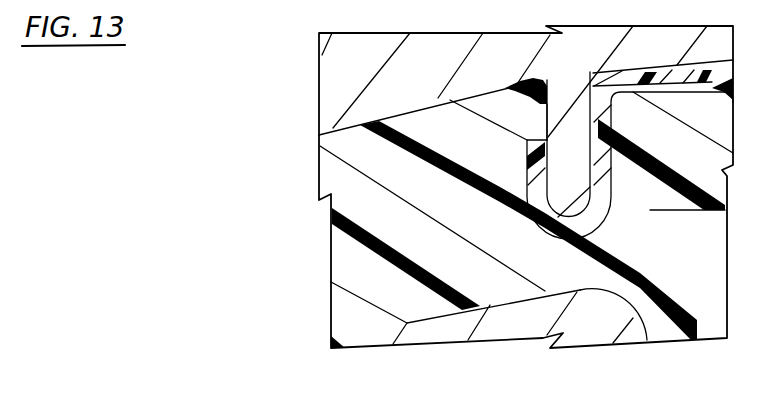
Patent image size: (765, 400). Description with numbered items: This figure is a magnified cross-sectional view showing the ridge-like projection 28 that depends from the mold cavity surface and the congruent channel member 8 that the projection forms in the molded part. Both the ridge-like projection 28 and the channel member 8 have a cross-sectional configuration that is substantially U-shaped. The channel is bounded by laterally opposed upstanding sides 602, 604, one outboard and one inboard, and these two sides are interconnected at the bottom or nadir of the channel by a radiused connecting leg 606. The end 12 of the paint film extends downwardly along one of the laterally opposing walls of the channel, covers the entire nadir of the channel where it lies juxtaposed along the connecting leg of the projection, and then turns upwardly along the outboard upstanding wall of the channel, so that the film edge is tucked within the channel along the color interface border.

The end of the film 12 is at (545, 141).
The upstanding side of the channel 602 is at (527, 168).
The ridge-like projection 28 is at (582, 190).
The upstanding side of the channel 604 is at (612, 178).
The channel member 8 is at (647, 210).
The radiused connecting leg 606 is at (556, 238).